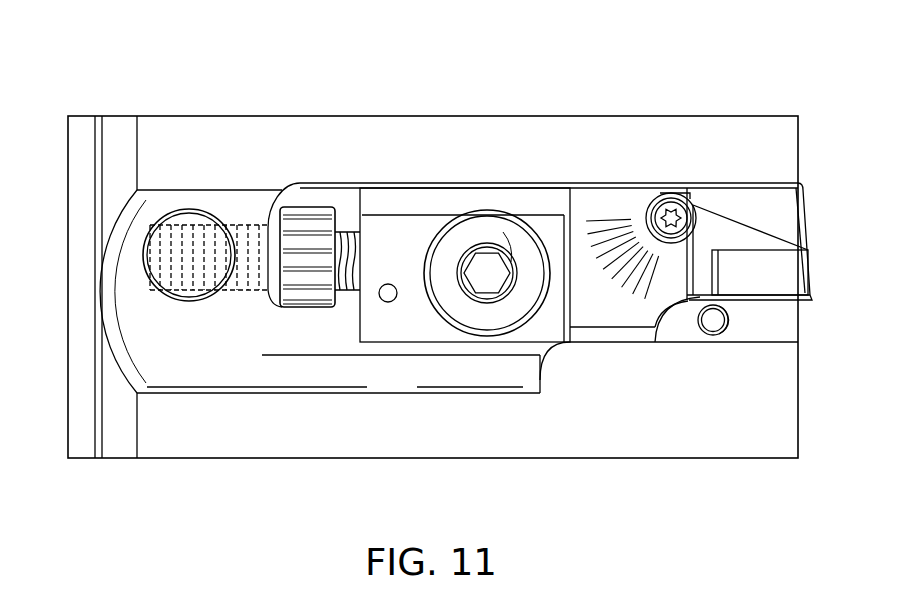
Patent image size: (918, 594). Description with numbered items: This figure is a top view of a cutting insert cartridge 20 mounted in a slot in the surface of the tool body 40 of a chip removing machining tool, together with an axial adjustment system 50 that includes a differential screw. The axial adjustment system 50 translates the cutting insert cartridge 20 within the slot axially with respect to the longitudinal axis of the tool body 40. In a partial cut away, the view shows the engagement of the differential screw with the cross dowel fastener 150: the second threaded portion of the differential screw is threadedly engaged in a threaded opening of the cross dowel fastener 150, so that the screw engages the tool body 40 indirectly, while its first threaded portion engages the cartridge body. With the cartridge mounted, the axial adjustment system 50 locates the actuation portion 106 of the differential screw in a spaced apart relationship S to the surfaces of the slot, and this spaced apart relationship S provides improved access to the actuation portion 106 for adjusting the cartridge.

The cutting insert cartridge 20 is at (575, 213).
The tool body 40 is at (194, 365).
The axial adjustment system 50 is at (266, 203).
The actuation portion 106 is at (310, 330).
The cross dowel fastener 150 is at (185, 220).
The spaced apart relationship S is at (323, 202).